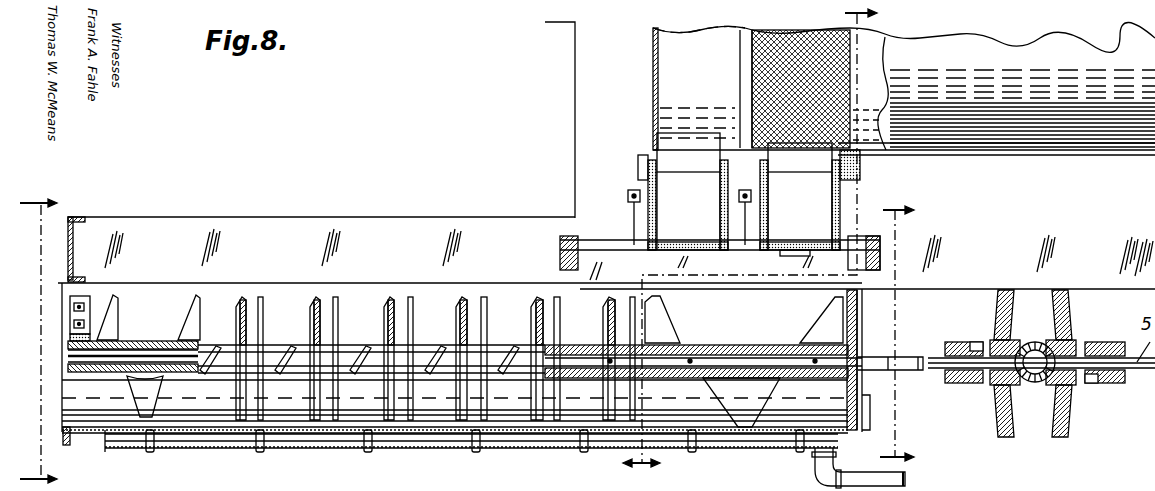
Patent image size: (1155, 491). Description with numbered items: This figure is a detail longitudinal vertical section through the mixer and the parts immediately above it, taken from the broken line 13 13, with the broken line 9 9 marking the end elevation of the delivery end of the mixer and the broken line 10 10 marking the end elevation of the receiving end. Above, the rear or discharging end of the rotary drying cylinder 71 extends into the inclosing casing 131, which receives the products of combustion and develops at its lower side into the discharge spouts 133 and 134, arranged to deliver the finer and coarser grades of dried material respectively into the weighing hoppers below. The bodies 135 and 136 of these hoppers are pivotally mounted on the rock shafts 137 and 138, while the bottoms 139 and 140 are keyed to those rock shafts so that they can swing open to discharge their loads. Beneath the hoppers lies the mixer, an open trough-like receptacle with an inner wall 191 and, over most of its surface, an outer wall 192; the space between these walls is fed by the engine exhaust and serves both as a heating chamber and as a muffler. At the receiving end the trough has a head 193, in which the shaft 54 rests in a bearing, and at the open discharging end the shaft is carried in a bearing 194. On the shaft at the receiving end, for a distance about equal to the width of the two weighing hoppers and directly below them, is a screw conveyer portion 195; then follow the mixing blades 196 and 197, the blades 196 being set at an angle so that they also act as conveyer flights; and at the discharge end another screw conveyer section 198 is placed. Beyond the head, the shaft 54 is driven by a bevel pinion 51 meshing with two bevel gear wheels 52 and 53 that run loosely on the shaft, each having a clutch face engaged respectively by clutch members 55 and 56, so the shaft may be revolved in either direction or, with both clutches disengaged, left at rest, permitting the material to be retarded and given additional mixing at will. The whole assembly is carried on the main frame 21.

The broken line 9 9 is at (38, 337).
The broken line 10 10 is at (897, 334).
The dotted line 13 13 is at (750, 242).
The main frame 21 is at (308, 225).
The bevel pinion 51 is at (1035, 393).
The bevel gear wheel 52 is at (1067, 415).
The bevel gear wheel 53 is at (1003, 413).
The shaft 54 is at (68, 357).
The clutch member 55 is at (1103, 343).
The clutch member 56 is at (970, 341).
The rotary drying cylinder 71 is at (802, 32).
The inclosing casing 131 is at (652, 65).
The discharge spout 133 is at (795, 170).
The discharge spout 134 is at (683, 175).
The weighing hopper body 135 is at (862, 186).
The weighing hopper body 136 is at (638, 183).
The rock shaft 137 is at (805, 254).
The rock shaft 138 is at (612, 251).
The hopper bottom 139 is at (812, 240).
The hopper bottom 140 is at (692, 240).
The inner wall 191 is at (203, 463).
The outer wall 192 is at (323, 449).
The head 193 is at (858, 398).
The bearing 194 is at (70, 372).
The screw conveyer portion 195 is at (670, 326).
The mixing blades 196 is at (312, 300).
The mixing blades 197 is at (259, 296).
The screw conveyer section 198 is at (189, 306).